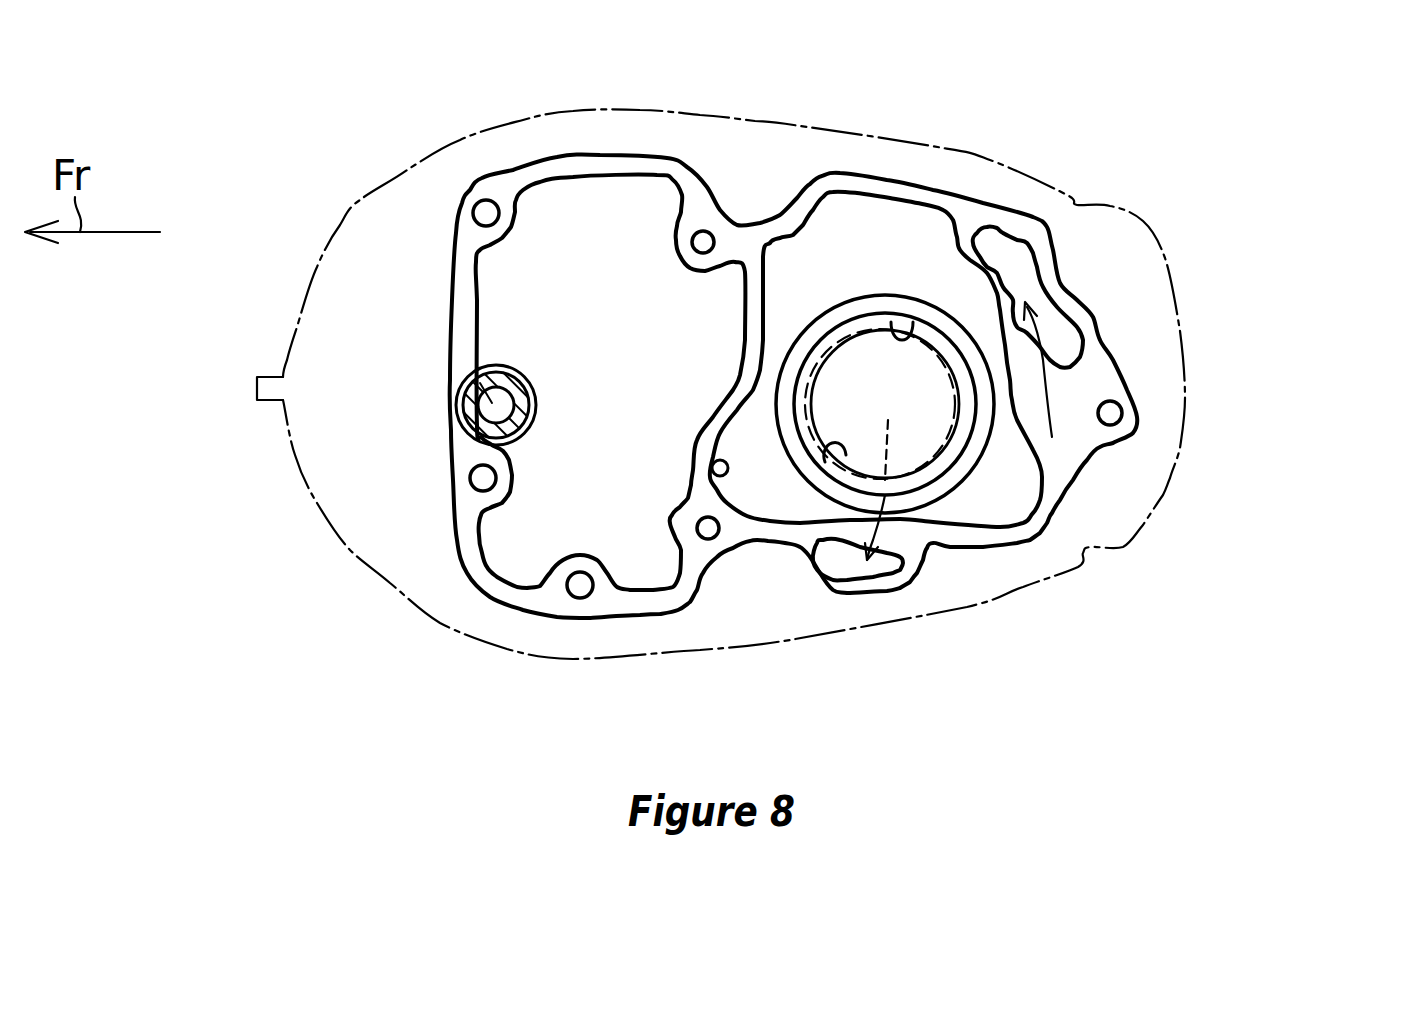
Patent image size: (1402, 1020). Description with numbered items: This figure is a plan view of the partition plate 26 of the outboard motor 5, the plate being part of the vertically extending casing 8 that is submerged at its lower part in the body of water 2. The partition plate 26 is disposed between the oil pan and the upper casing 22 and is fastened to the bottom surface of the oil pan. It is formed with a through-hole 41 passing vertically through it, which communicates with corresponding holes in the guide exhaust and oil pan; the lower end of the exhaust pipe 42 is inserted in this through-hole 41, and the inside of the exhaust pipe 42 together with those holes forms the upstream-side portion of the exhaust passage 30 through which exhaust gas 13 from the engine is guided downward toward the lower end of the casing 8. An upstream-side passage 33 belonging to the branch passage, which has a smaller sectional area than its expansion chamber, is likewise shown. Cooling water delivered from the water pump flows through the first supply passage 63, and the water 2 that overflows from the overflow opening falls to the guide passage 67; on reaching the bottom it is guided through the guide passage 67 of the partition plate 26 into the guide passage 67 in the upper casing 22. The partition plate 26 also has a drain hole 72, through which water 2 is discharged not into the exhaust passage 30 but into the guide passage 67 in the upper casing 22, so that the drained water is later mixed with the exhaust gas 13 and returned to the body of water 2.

The outboard motor 5 is at (1300, 135).
The casing 8 is at (1280, 260).
The partition plate 26 is at (1030, 541).
The water 2 is at (1050, 387).
The upper casing 22 is at (1178, 453).
The first supply passage 63 is at (462, 372).
The exhaust passage 30 is at (835, 385).
The through-hole 41 is at (913, 330).
The exhaust pipe 42 is at (840, 463).
The upstream-side passage 33 is at (847, 565).
The exhaust gas 13 is at (903, 515).
The guide passage 67 is at (1010, 240).
The drain hole 72 is at (717, 452).